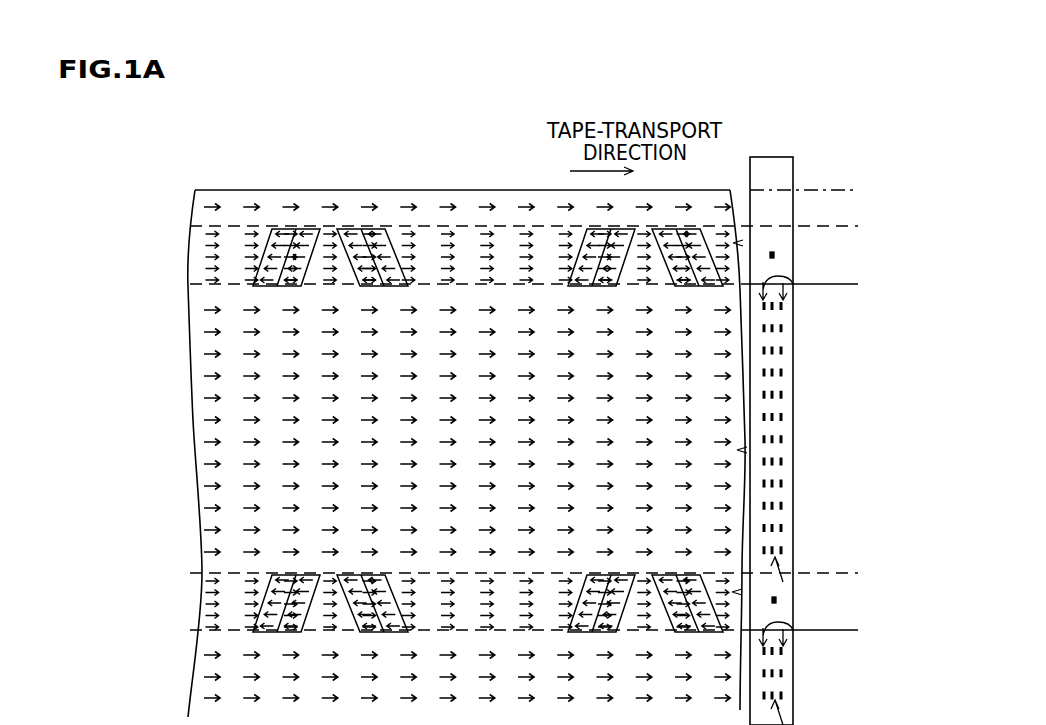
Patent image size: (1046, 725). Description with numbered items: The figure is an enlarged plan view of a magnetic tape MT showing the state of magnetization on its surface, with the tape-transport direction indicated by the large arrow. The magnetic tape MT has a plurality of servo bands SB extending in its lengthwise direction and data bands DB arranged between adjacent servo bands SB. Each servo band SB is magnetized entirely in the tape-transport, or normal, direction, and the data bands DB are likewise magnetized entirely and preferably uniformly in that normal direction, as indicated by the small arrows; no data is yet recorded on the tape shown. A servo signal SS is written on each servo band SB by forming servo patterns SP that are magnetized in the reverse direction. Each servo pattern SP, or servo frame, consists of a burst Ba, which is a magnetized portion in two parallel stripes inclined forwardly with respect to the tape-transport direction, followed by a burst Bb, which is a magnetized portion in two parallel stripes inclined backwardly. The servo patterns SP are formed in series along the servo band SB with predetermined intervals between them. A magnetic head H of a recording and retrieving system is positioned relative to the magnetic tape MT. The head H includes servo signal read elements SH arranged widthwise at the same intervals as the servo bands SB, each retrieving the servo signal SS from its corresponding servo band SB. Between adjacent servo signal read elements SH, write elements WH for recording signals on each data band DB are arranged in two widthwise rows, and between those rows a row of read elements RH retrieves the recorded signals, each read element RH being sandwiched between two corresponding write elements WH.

The magnetic tape MT is at (233, 190).
The servo pattern SP is at (391, 153).
The burst Ba is at (323, 219).
The burst Bb is at (413, 219).
The servo band SB is at (502, 226).
The data band DB is at (737, 450).
The magnetic head H is at (760, 157).
The servo signal SS is at (733, 243).
The servo signal read element SH is at (776, 255).
The write element WH is at (793, 284).
The read element RH is at (783, 582).